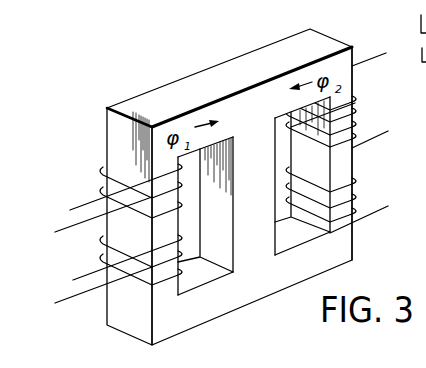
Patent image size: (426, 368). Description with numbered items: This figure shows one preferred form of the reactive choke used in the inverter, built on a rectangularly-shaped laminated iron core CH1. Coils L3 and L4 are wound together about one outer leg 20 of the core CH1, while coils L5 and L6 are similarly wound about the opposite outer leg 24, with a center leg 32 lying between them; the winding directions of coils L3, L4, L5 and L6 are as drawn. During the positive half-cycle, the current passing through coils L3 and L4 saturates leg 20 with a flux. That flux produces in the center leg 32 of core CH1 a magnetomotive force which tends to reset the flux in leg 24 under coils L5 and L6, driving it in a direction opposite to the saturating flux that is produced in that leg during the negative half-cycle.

The laminated iron core CH1 is at (221, 64).
The leg 20 is at (167, 228).
The center leg 32 is at (257, 249).
The leg 24 is at (347, 231).
The coil L3 is at (76, 217).
The coil L4 is at (74, 290).
The coil L5 is at (337, 96).
The coil L6 is at (337, 182).